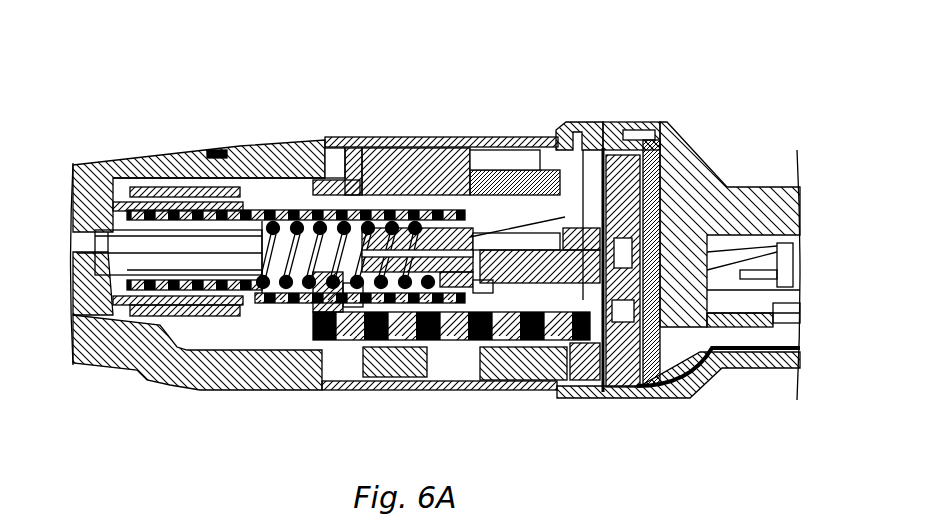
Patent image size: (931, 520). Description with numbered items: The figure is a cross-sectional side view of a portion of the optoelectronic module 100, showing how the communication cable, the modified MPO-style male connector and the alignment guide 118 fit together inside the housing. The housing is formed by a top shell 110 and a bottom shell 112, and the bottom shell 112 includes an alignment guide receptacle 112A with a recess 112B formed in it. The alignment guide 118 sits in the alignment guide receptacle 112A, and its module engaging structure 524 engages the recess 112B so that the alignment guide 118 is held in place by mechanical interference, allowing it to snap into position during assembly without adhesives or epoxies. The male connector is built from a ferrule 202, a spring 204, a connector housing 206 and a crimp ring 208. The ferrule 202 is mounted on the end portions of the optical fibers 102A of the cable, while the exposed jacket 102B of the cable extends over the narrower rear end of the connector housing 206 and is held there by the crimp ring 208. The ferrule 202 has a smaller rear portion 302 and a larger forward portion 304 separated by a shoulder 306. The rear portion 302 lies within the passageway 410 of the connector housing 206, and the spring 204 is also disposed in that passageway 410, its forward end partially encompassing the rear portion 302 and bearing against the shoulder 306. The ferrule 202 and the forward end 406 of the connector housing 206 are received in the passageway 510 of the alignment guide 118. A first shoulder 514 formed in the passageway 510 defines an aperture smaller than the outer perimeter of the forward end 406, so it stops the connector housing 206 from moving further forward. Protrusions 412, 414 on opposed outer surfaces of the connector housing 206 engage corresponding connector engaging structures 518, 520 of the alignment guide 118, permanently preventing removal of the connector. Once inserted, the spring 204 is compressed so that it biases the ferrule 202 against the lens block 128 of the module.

The optoelectronic module 100 is at (322, 55).
The optical fibers 102A is at (160, 378).
The exposed jacket 102B is at (251, 292).
The top shell 110 is at (753, 186).
The bottom shell 112 is at (750, 370).
The alignment guide receptacle 112A is at (403, 372).
The recess 112B is at (443, 365).
The alignment guide 118 is at (478, 155).
The lens block 128 is at (652, 138).
The ferrule 202 is at (550, 292).
The spring 204 is at (312, 200).
The connector housing 206 is at (270, 190).
The crimp ring 208 is at (250, 190).
The rear portion 302 is at (385, 350).
The forward portion 304 is at (565, 224).
The shoulder 306 is at (436, 226).
The forward end 406 is at (475, 290).
The passageway 410 is at (199, 243).
The protrusion 412 is at (367, 150).
The protrusion 414 is at (327, 318).
The passageway 510 is at (594, 188).
The first shoulder 514 is at (478, 170).
The connector engaging structure 518 is at (310, 318).
The connector engaging structure 520 is at (314, 182).
The module engaging structure 524 is at (456, 305).